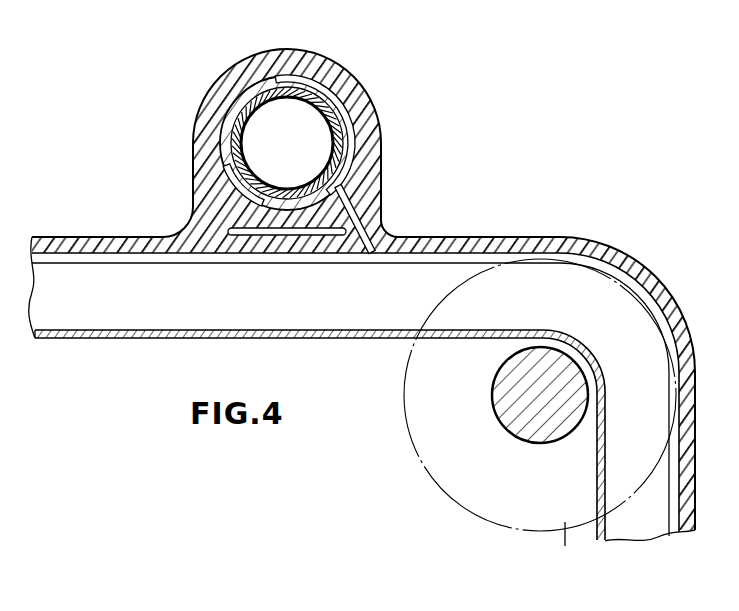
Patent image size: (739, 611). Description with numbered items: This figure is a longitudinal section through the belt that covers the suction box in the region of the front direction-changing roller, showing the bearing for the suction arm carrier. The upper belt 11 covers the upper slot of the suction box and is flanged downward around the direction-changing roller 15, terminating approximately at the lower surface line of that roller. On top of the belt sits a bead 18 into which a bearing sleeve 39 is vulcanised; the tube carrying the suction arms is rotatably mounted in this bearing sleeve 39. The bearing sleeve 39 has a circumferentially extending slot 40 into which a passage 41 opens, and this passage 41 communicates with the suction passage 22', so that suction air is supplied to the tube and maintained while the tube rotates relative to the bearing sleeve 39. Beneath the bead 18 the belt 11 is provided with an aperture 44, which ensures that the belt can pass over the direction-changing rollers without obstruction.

The upper belt 11 is at (630, 278).
The direction-changing roller 15 is at (540, 419).
The bead 18 is at (360, 102).
The suction passage 22' is at (350, 368).
The bearing sleeve 39 is at (232, 113).
The circumferentially extending slot 40 is at (350, 153).
The passage 41 is at (363, 228).
The aperture 44 is at (252, 231).